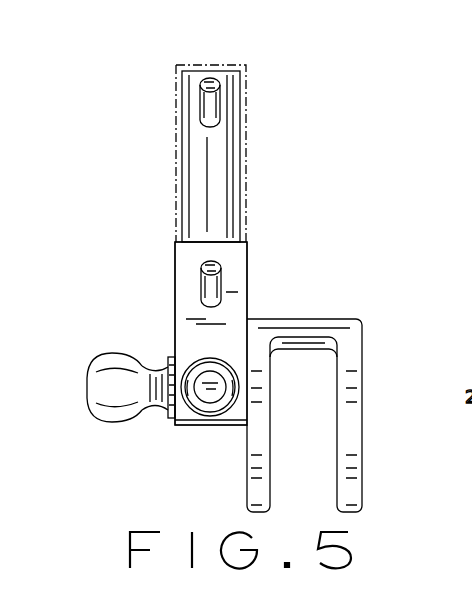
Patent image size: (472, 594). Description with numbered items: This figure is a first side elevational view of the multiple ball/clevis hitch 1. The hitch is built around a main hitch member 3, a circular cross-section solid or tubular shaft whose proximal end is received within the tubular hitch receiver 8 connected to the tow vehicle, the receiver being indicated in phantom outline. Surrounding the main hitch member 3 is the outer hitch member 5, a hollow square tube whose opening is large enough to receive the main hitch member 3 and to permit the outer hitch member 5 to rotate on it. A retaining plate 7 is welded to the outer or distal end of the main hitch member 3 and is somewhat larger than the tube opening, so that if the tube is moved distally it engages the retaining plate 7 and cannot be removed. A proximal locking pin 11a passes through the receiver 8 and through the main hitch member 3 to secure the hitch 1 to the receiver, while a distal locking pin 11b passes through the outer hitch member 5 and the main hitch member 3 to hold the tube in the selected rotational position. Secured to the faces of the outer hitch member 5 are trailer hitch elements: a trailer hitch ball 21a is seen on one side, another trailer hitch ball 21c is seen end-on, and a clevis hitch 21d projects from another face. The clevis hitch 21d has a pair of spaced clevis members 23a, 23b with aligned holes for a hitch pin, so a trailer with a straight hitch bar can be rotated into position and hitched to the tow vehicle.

The multiple ball/clevis hitch 1 is at (108, 238).
The main hitch member 3 is at (202, 161).
The outer hitch member 5 is at (202, 263).
The retaining plate 7 is at (205, 425).
The hitch receiver 8 is at (177, 89).
The proximal locking pin 11a is at (221, 110).
The distal locking pin 11b is at (222, 283).
The trailer hitch ball 21a is at (98, 363).
The trailer hitch ball 21c is at (197, 357).
The clevis hitch 21d is at (362, 368).
The clevis member 23a is at (247, 455).
The clevis member 23b is at (362, 453).